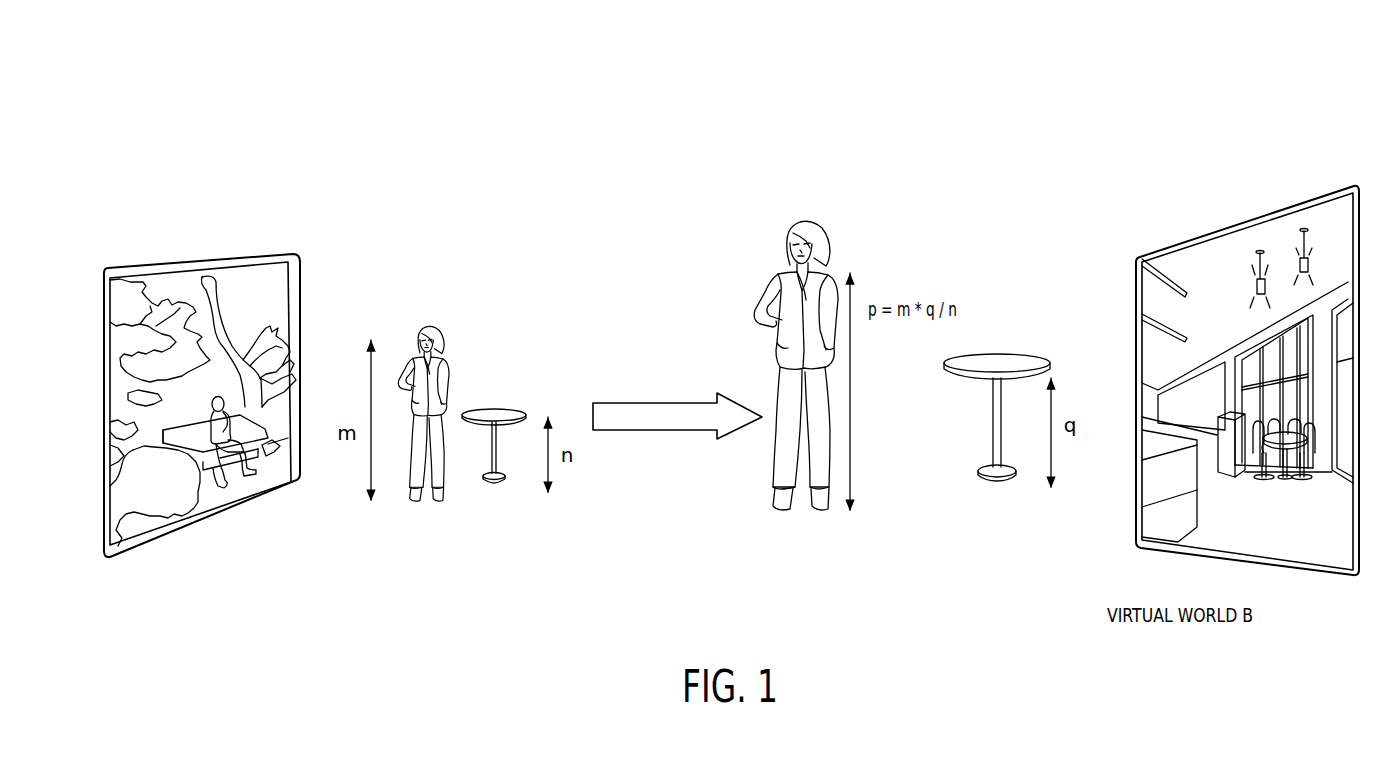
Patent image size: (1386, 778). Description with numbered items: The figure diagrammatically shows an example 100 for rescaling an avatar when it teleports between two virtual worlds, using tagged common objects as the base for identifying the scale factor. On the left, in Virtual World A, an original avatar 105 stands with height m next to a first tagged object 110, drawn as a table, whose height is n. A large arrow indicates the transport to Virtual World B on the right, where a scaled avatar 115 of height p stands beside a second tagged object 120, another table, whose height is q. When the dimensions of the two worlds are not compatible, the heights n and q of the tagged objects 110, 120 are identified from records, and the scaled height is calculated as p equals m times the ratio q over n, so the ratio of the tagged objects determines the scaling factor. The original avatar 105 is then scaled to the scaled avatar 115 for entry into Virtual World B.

The example 100 is at (262, 109).
The original avatar 105 is at (446, 304).
The first tagged object 110 is at (508, 377).
The scaled avatar 115 is at (808, 212).
The second tagged object 120 is at (1043, 341).